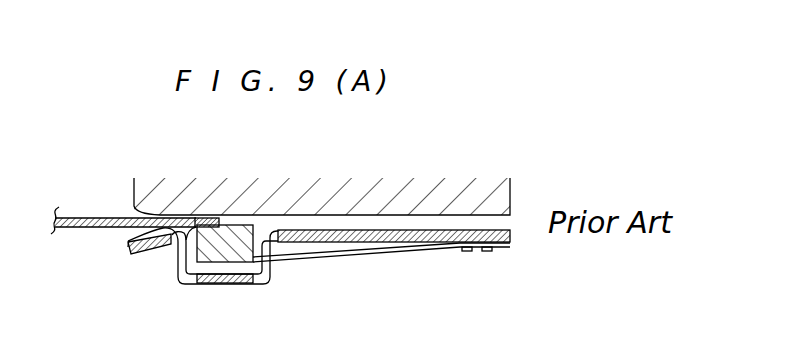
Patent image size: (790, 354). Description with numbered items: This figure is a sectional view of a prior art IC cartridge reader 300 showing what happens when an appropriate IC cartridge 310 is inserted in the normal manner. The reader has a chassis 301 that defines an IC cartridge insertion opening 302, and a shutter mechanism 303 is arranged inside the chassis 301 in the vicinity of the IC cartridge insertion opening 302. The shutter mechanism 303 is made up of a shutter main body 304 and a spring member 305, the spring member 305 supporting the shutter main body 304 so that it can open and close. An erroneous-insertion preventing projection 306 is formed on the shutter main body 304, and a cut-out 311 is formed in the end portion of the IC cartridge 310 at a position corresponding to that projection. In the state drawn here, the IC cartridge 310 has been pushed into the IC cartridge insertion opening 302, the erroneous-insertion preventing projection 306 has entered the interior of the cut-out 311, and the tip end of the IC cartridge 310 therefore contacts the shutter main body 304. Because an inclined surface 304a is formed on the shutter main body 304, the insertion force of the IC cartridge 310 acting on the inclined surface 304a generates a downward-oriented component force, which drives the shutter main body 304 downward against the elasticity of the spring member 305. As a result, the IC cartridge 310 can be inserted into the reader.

The IC cartridge reader 300 is at (395, 160).
The chassis 301 is at (344, 196).
The IC cartridge insertion opening 302 is at (128, 247).
The shutter mechanism 303 is at (319, 262).
The shutter main body 304 is at (224, 262).
The inclined surface 304a is at (187, 285).
The spring member 305 is at (382, 252).
The erroneous-insertion preventing projection 306 is at (172, 239).
The IC cartridge 310 is at (88, 218).
The cut-out 311 is at (213, 218).